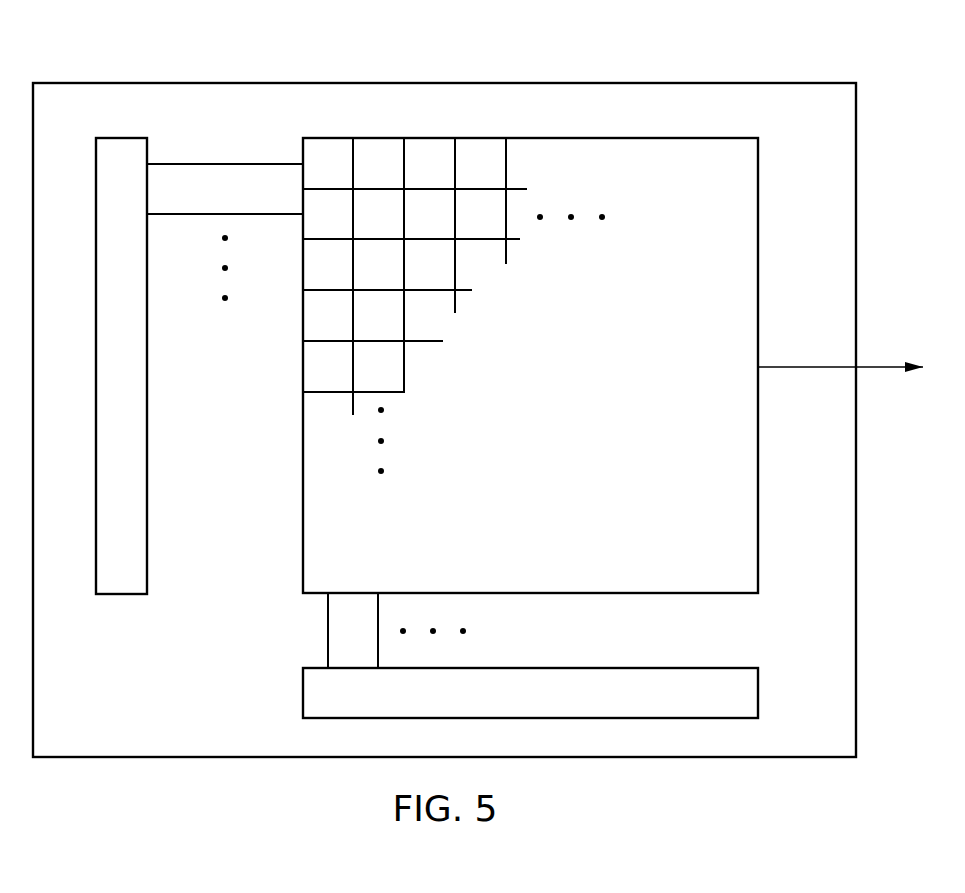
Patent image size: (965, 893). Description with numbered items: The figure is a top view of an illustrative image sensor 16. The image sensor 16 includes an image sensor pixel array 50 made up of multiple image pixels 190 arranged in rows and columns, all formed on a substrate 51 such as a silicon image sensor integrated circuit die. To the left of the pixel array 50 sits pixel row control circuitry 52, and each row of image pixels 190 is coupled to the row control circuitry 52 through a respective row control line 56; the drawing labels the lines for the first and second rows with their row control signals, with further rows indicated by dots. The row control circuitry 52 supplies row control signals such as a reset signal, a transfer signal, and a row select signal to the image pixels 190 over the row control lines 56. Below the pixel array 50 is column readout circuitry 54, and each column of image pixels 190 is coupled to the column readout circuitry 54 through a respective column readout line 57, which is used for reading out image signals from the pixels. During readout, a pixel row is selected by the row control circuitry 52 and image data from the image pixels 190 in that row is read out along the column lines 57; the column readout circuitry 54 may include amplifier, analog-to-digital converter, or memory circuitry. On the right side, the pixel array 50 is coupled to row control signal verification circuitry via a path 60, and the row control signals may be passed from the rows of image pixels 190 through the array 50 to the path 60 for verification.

The image sensor 16 is at (677, 65).
The image sensor pixel array 50 is at (601, 137).
The substrate 51 is at (140, 83).
The pixel row control circuitry 52 is at (147, 523).
The column readout circuitry 54 is at (303, 694).
The row control line 56 is at (265, 162).
The column readout line 57 is at (328, 627).
The path 60 is at (888, 369).
The image pixels 190 is at (335, 148).